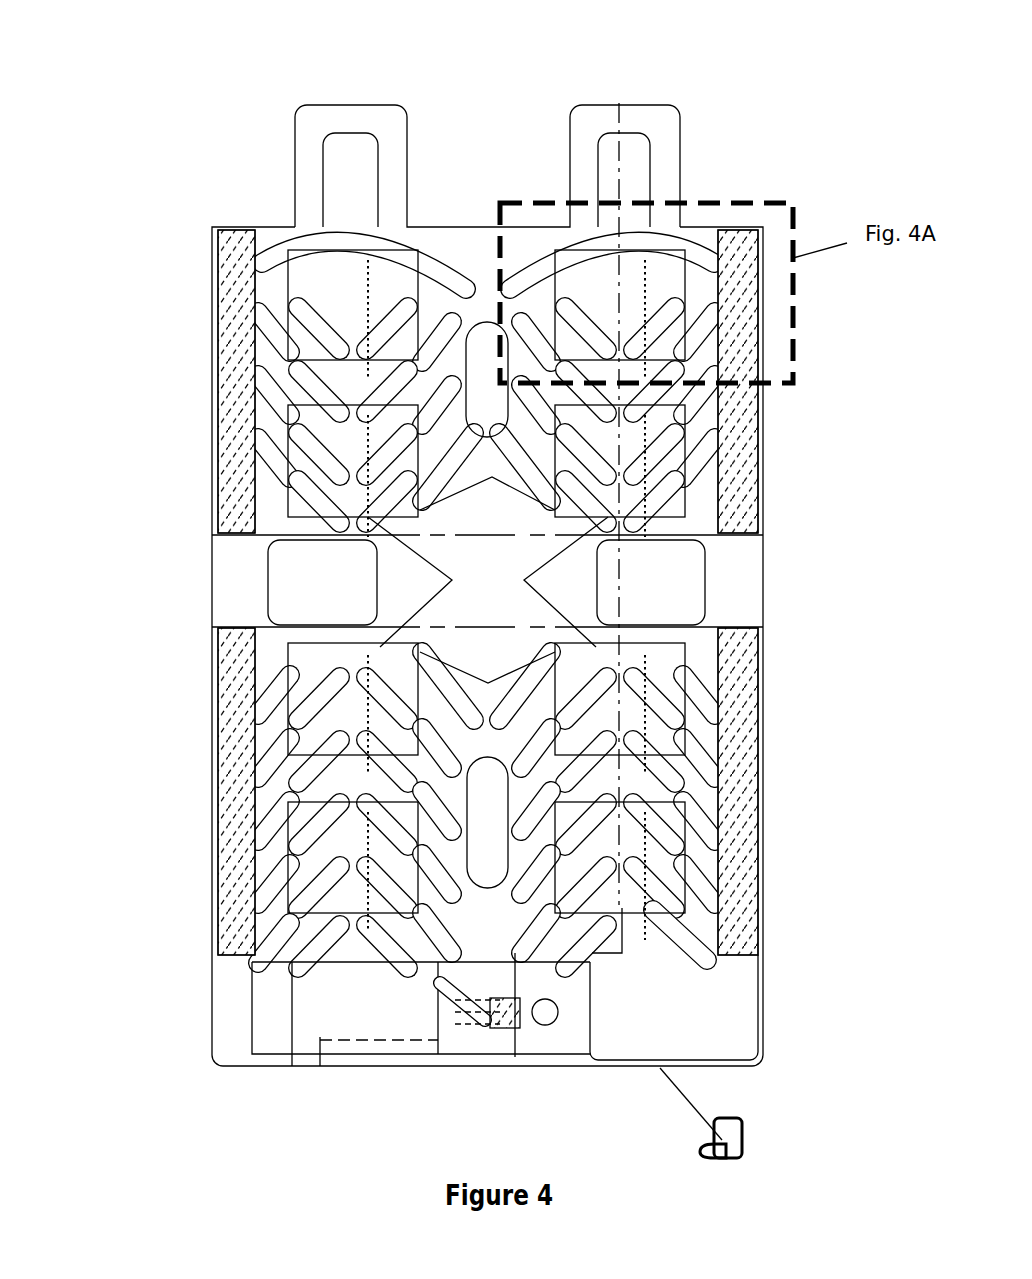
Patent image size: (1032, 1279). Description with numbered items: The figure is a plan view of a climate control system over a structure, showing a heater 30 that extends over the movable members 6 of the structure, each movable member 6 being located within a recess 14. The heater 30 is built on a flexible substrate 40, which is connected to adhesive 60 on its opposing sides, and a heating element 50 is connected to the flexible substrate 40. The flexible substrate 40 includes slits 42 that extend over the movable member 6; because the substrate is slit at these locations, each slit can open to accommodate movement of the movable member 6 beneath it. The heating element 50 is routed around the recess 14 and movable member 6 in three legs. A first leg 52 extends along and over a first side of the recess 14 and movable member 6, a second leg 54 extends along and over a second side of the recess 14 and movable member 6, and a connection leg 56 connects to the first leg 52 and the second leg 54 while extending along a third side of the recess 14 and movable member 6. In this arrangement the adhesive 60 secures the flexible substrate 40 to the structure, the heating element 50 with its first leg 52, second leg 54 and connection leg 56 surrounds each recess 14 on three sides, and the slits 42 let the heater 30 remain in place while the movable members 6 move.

The heater 30 is at (812, 148).
The connection leg 56 is at (357, 233).
The first leg 52 is at (293, 271).
The slits 42 is at (350, 432).
The second leg 54 is at (477, 272).
The heating element 50 is at (440, 557).
The movable member 6 is at (746, 471).
The recess 14 is at (663, 487).
The flexible substrate 40 is at (717, 518).
The adhesive 60 is at (760, 798).